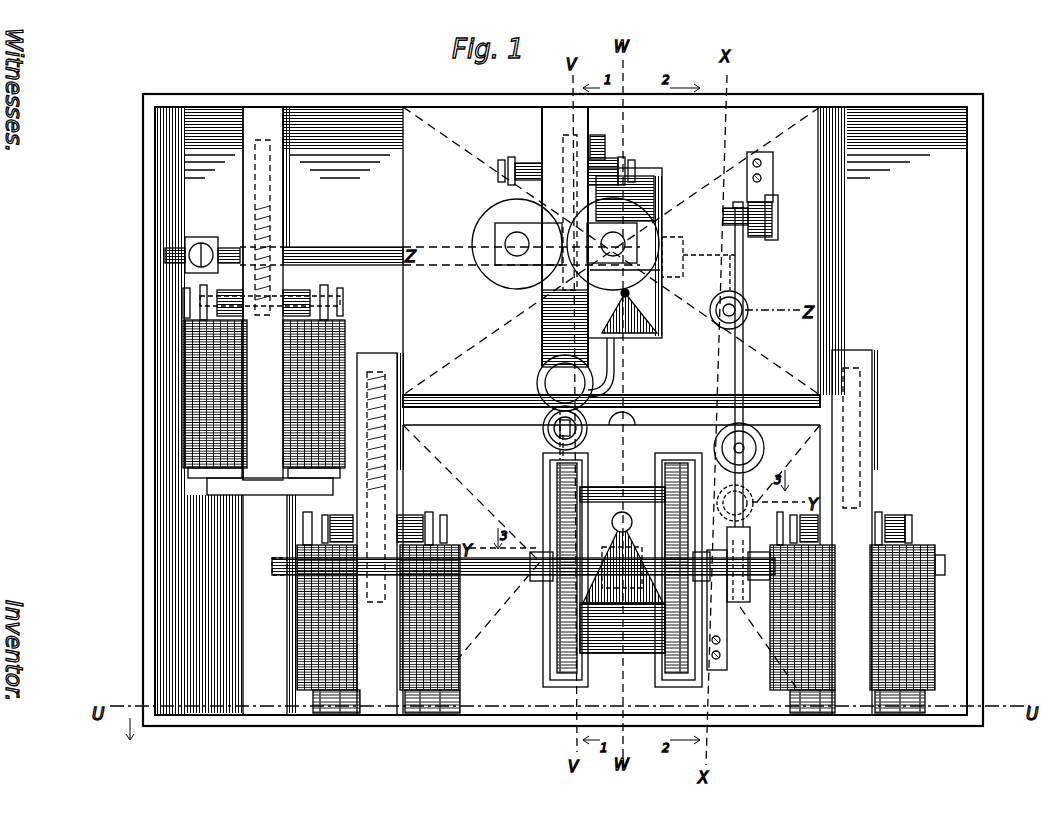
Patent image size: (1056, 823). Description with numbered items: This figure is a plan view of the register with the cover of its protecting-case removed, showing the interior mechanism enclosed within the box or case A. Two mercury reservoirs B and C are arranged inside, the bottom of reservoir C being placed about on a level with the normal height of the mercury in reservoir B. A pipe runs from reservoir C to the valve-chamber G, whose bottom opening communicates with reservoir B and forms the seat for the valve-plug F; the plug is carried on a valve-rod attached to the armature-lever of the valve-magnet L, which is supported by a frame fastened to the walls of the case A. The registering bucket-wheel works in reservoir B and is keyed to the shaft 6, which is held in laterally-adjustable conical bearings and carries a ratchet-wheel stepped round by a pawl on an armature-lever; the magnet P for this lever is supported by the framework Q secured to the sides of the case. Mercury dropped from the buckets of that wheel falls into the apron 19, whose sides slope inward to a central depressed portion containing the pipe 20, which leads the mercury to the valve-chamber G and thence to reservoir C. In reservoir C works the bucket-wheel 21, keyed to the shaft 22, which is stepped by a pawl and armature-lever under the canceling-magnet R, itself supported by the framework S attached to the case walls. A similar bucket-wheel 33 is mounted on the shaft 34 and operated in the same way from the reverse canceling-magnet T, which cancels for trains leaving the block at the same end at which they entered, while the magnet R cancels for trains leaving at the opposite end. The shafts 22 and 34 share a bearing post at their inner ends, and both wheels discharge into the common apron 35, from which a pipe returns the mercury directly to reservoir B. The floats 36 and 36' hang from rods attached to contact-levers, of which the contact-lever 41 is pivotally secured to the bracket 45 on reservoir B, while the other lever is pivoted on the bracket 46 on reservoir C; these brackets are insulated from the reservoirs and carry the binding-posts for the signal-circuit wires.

The box or case A is at (152, 488).
The reservoir C is at (611, 570).
The shaft 6 is at (337, 258).
The framework Q is at (270, 411).
The magnet P is at (343, 345).
The framework S is at (381, 534).
The canceling-magnet R is at (452, 625).
The shaft 22 is at (518, 583).
The valve-magnet L is at (485, 215).
The apron 19 is at (640, 176).
The pipe 20 is at (620, 370).
The reservoir B is at (539, 383).
The valve-chamber G is at (545, 438).
The valve-plug F is at (546, 426).
The bucket-wheel 21 is at (545, 502).
The bucket-wheel 33 is at (679, 462).
The apron 35 is at (622, 570).
The bracket 46 is at (800, 693).
The contact-lever 41 is at (744, 288).
The bracket 45 is at (774, 226).
The float 36' is at (719, 292).
The float 36 is at (728, 498).
The shaft 34 is at (750, 558).
The reverse canceling-magnet T is at (932, 643).